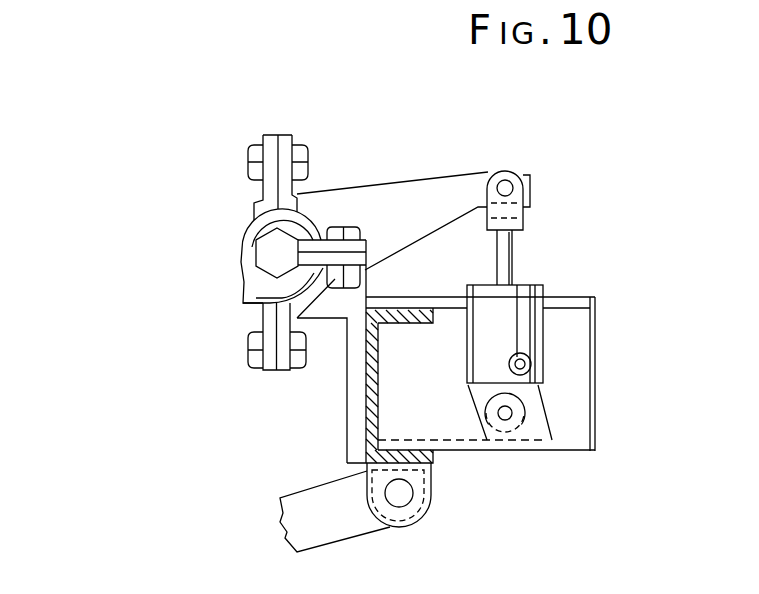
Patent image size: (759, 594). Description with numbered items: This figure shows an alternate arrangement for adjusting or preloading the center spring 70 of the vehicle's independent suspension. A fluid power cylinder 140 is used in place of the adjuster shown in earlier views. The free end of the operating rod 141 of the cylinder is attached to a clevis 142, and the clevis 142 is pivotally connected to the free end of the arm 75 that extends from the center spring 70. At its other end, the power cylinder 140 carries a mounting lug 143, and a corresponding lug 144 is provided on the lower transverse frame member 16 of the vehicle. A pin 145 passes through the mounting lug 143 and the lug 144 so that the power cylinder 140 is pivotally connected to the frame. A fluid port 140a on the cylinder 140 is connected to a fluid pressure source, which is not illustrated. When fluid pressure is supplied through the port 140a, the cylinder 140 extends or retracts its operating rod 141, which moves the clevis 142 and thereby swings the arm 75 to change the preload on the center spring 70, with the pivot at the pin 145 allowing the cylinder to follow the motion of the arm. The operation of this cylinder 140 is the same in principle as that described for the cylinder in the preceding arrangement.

The center spring 70 is at (228, 192).
The arm 75 is at (432, 184).
The clevis 142 is at (523, 213).
The operating rod 141 is at (500, 263).
The fluid power cylinder 140 is at (483, 340).
The fluid port 140a is at (527, 364).
The mounting lug 143 is at (483, 395).
The lug 144 is at (475, 432).
The pin 145 is at (512, 413).
The lower transverse frame member 16 is at (573, 445).